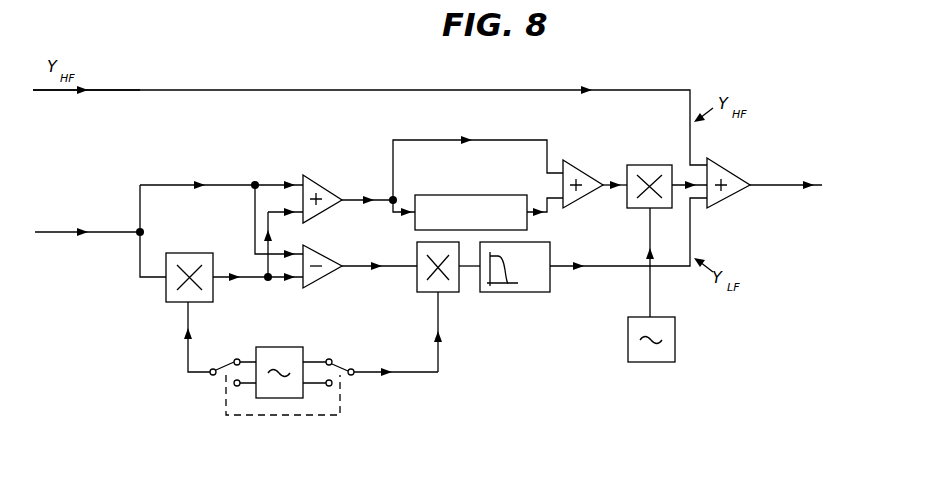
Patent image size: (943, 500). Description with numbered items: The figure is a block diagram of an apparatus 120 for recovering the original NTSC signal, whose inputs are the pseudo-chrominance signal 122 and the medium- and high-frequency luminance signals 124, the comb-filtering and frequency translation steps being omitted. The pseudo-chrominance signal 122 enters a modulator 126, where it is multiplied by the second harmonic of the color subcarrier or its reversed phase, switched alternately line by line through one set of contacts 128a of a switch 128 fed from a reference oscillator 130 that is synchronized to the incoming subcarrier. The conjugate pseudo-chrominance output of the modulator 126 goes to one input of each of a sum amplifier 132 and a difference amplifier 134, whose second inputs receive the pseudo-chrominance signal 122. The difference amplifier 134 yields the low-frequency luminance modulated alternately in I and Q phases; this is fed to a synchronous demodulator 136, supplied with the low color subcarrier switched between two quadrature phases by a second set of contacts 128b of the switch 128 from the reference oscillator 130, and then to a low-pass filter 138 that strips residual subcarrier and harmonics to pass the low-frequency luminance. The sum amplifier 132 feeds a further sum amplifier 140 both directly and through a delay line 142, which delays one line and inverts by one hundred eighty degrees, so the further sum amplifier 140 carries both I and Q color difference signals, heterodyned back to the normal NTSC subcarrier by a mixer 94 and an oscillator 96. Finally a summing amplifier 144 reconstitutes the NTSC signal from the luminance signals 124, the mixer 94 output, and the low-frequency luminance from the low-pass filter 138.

The mixer 94 is at (653, 165).
The oscillator 96 is at (675, 345).
The apparatus 120 is at (275, 87).
The pseudo-chrominance signal 122 is at (52, 234).
The medium- and high-frequency luminance signals 124 is at (104, 93).
The modulator 126 is at (165, 285).
The switch 128 is at (302, 418).
The first set of contacts 128a is at (210, 375).
The second set of contacts 128b is at (352, 377).
The reference oscillator 130 is at (305, 347).
The sum amplifier 132 is at (312, 175).
The difference amplifier 134 is at (304, 284).
The synchronous demodulator 136 is at (449, 293).
The low-pass filter 138 is at (545, 293).
The further sum amplifier 140 is at (577, 165).
The delay line 142 is at (452, 195).
The summing amplifier 144 is at (735, 194).